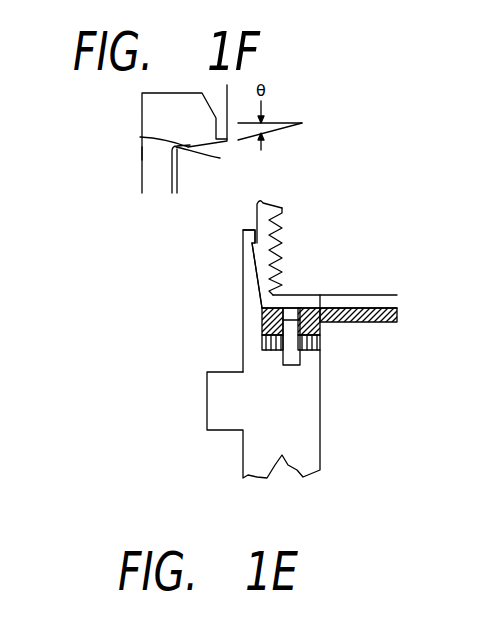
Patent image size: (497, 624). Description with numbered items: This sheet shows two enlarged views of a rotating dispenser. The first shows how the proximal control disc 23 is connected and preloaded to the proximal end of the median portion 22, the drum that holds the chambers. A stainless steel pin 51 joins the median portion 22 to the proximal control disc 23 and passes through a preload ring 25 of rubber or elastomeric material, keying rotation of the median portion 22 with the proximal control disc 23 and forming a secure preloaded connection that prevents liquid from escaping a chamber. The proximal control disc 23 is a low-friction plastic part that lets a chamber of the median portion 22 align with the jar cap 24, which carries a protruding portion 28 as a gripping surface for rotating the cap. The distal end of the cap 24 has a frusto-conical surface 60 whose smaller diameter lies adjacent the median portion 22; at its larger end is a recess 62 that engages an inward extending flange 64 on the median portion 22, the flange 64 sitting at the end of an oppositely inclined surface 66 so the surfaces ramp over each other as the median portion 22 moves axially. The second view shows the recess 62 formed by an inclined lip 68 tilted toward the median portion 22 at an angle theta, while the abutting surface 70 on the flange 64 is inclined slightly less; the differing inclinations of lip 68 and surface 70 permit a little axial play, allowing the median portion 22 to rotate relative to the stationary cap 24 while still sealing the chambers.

In FIG. 1E, the median portion 22 is at (243, 277).
In FIG. 1E, the proximal control disc 23 is at (320, 295).
In FIG. 1E, the jar cap 24 is at (302, 293).
In FIG. 1E, the preload ring 25 is at (320, 346).
In FIG. 1E, the protruding portion 28 is at (273, 207).
In FIG. 1E, the stainless steel pin 51 is at (283, 358).
In FIG. 1F, the frusto-conical surface 60 is at (179, 177).
In FIG. 1E, the frusto-conical surface 60 is at (255, 262).
In FIG. 1F, the recess 62 is at (223, 109).
In FIG. 1F, the flange 64 is at (142, 147).
In FIG. 1E, the flange 64 is at (255, 231).
In FIG. 1E, the inclined surface 66 is at (272, 240).
In FIG. 1F, the lip 68 is at (220, 158).
In FIG. 1F, the abutting surface 70 is at (140, 137).